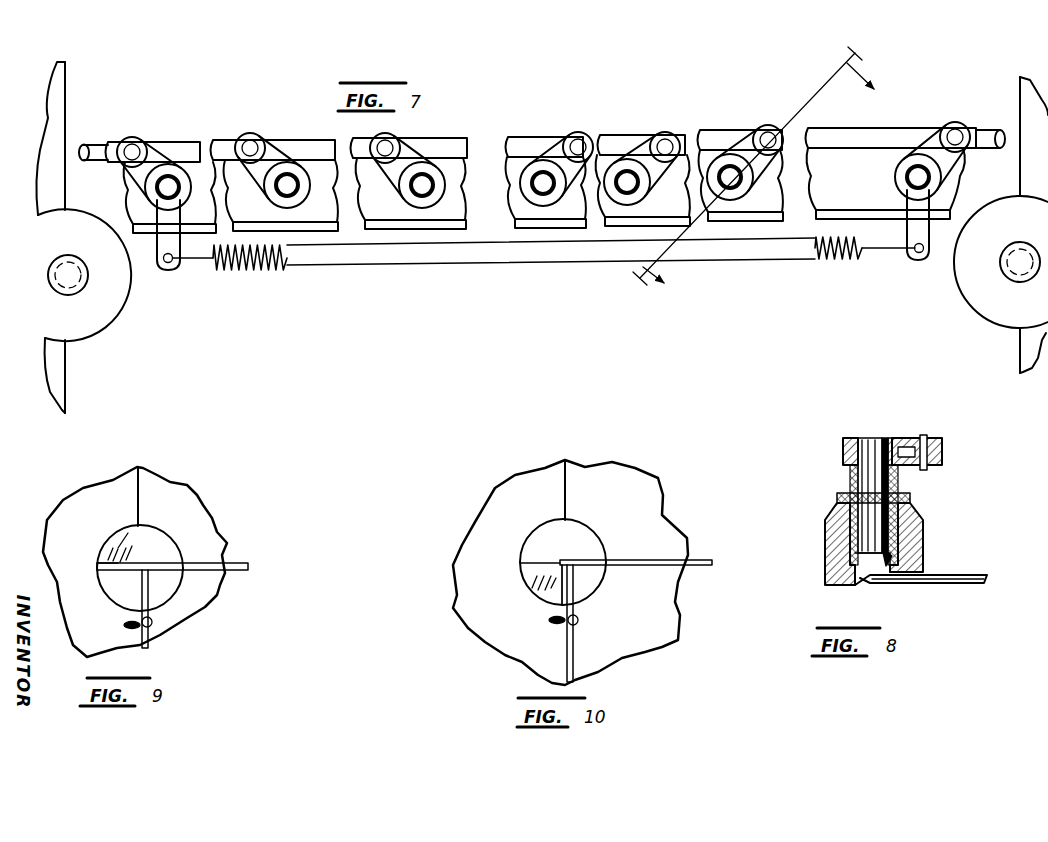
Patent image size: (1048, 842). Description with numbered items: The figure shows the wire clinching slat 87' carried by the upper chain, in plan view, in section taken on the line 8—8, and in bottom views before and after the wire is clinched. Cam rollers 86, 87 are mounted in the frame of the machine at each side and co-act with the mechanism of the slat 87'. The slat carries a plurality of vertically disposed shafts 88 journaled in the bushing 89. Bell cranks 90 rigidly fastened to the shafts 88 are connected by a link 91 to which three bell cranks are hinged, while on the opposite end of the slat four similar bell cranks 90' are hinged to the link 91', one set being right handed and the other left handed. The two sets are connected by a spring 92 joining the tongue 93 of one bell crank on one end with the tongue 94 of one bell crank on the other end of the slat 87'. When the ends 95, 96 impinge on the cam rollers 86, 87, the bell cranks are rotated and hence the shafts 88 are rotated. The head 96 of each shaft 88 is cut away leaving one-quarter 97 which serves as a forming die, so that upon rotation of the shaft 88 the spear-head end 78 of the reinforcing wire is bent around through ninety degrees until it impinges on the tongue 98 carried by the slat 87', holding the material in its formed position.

In FIG. 7, the section line 8— 8 is at (760, 174).
In FIG. 8, the forward end of reinforcing wire 78 is at (878, 586).
In FIG. 9, the forward end of reinforcing wire 78 is at (118, 575).
In FIG. 10, the forward end of reinforcing wire 78 is at (588, 590).
In FIG. 7, the cam roller 86 is at (112, 325).
In FIG. 7, the cam roller 87 is at (995, 265).
In FIG. 8, the cam roller 87 is at (890, 544).
In FIG. 7, the wire clinching slat 87' is at (424, 183).
In FIG. 9, the wire clinching slat 87' is at (180, 580).
In FIG. 10, the wire clinching slat 87' is at (641, 578).
In FIG. 7, the shaft 88 is at (170, 185).
In FIG. 8, the shaft 88 is at (873, 438).
In FIG. 8, the bushing 89 is at (914, 496).
In FIG. 7, the bell crank 90 is at (276, 148).
In FIG. 8, the bell crank 90 is at (881, 436).
In FIG. 7, the bell crank 90' is at (749, 150).
In FIG. 7, the link 91 is at (275, 172).
In FIG. 7, the link 91' is at (741, 156).
In FIG. 7, the spring 92 is at (287, 268).
In FIG. 7, the tongue 93 is at (166, 266).
In FIG. 7, the tongue 94 is at (912, 258).
In FIG. 7, the end of bell crank 95 is at (87, 146).
In FIG. 7, the end of bell crank / head of shaft 96 is at (997, 130).
In FIG. 8, the end of bell crank / head of shaft 96 is at (905, 548).
In FIG. 9, the forming die 97 is at (118, 550).
In FIG. 10, the forming die 97 is at (530, 574).
In FIG. 9, the tongue 98 is at (150, 616).
In FIG. 10, the tongue 98 is at (578, 660).